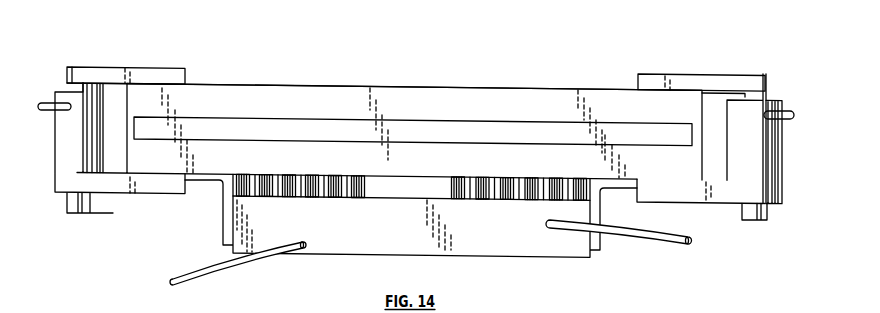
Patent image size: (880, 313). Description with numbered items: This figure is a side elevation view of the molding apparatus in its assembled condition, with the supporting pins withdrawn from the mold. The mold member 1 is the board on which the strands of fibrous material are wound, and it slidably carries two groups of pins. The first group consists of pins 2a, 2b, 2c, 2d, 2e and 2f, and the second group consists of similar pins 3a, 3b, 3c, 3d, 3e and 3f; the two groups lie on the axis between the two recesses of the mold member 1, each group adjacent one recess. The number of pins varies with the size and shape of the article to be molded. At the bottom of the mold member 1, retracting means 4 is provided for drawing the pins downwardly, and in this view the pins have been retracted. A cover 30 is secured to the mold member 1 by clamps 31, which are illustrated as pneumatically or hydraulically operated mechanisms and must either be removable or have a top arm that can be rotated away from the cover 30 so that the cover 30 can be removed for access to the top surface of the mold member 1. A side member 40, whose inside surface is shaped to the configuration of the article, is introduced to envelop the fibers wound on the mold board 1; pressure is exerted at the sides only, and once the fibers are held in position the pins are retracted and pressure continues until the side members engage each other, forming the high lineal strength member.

The mold member 1 is at (158, 161).
The pin 2a is at (244, 180).
The pin 2b is at (266, 190).
The pin 2c is at (290, 181).
The pin 2d is at (311, 190).
The pin 2e is at (335, 181).
The pin 2f is at (358, 190).
The pin 3a is at (578, 182).
The pin 3b is at (553, 182).
The pin 3c is at (530, 195).
The pin 3d is at (506, 182).
The pin 3e is at (482, 195).
The pin 3f is at (458, 182).
The means for retracting the pins 4 is at (558, 263).
The cover 30 is at (390, 82).
The clamps 31 is at (118, 63).
The side member 40 is at (286, 113).